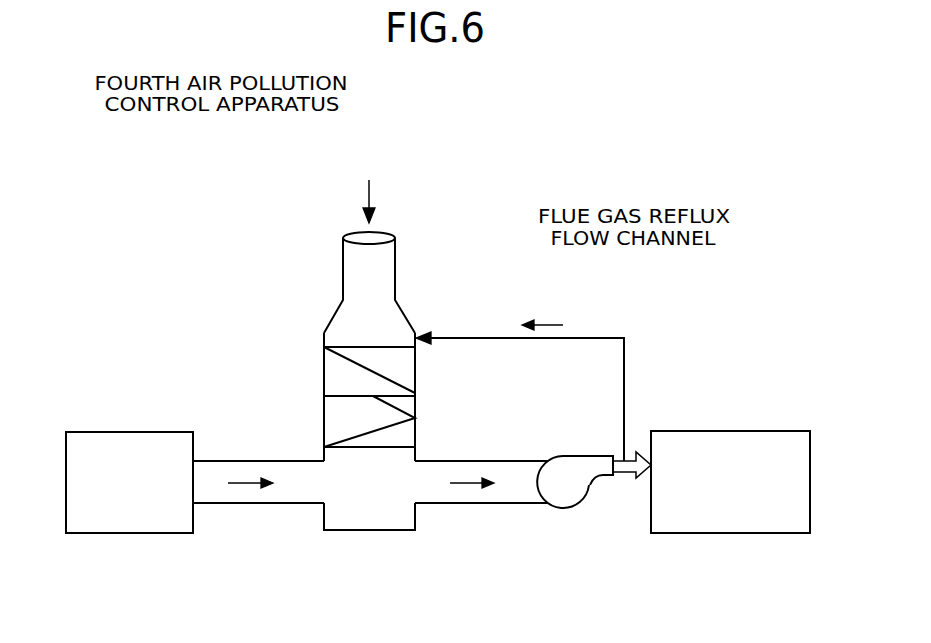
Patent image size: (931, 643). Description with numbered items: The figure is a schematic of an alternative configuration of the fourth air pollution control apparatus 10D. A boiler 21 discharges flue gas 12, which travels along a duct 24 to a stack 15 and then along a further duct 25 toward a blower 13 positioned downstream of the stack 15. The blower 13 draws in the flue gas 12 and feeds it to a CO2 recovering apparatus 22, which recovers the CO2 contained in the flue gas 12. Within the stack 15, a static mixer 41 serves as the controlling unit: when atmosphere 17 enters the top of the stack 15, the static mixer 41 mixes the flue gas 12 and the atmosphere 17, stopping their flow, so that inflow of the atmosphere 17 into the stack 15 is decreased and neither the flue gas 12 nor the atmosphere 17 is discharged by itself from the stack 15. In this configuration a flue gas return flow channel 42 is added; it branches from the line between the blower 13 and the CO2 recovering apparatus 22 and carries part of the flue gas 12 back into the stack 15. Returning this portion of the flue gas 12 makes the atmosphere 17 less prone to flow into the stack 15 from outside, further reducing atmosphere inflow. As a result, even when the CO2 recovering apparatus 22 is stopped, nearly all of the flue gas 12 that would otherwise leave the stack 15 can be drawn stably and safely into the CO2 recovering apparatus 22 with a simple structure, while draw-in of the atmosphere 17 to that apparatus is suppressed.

The fourth air pollution control apparatus 10D is at (228, 168).
The flue gas 12 is at (250, 477).
The blower 13 is at (567, 510).
The stack 15 is at (343, 263).
The atmosphere 17 is at (369, 190).
The boiler 21 is at (128, 431).
The CO2 recovering apparatus 22 is at (715, 430).
The flue gas duct 24 is at (235, 504).
The flue gas duct 25 is at (497, 504).
The static mixer 41 is at (370, 347).
The flue gas return flow channel 42 is at (594, 338).